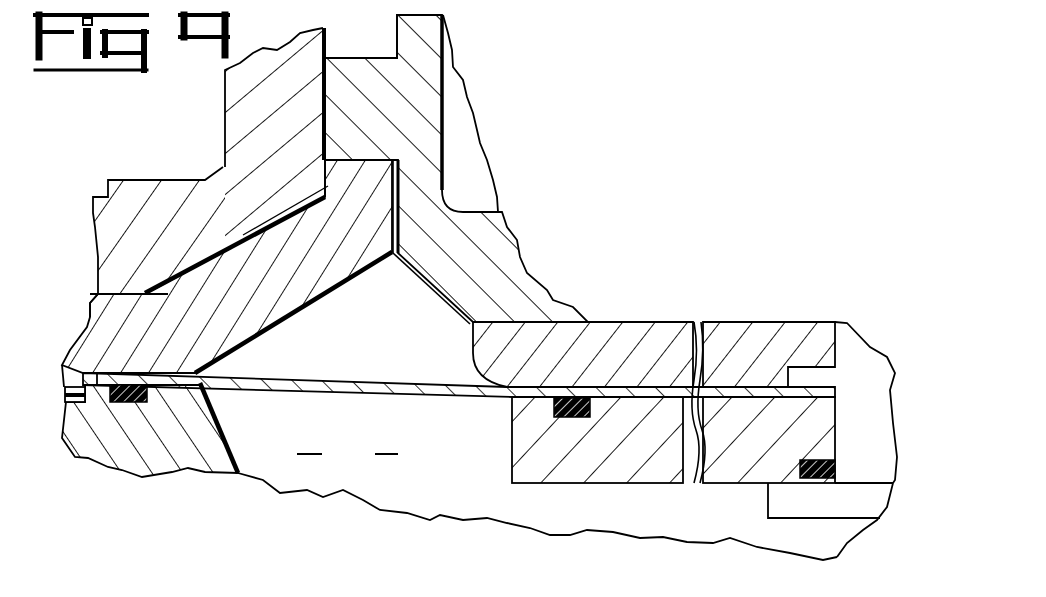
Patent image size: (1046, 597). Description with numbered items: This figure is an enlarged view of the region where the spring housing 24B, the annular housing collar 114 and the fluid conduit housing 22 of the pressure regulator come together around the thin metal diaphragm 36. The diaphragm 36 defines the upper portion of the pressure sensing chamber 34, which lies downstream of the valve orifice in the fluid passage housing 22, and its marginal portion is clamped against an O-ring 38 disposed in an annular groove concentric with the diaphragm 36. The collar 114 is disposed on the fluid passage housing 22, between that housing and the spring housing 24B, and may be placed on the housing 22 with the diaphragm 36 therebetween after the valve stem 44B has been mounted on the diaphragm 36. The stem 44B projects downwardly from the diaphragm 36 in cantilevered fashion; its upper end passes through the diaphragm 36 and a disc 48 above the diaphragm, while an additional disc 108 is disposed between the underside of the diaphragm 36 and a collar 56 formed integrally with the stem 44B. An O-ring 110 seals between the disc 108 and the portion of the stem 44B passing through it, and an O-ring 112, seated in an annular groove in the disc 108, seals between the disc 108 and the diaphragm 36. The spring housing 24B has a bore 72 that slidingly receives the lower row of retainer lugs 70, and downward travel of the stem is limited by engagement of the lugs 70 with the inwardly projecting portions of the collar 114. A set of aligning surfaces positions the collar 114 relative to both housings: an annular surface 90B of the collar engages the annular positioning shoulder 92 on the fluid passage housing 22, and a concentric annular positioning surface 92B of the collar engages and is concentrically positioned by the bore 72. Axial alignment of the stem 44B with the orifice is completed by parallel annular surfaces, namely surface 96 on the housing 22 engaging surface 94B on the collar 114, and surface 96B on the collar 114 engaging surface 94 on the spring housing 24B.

The spring housing 24B is at (225, 98).
The bore 72 is at (323, 28).
The lugs 70 is at (372, 53).
The surface 94 is at (92, 316).
The annular positioning surface 92B is at (323, 190).
The surface 96B is at (95, 318).
The housing collar 114 is at (90, 307).
The surface 96 is at (195, 372).
The diaphragm 36 is at (371, 378).
The annular surface 90B is at (85, 415).
The annular positioning shoulder 92 is at (68, 386).
The O-ring 38 is at (137, 404).
The surface 94B is at (172, 472).
The fluid conduit housing 22 is at (140, 478).
The pressure sensing chamber 34 is at (347, 455).
The disc 48 is at (650, 320).
The disc 108 is at (559, 486).
The O-ring 110 is at (768, 492).
The O-ring 112 is at (553, 410).
The collar 56 is at (733, 520).
The stem 44B is at (833, 545).